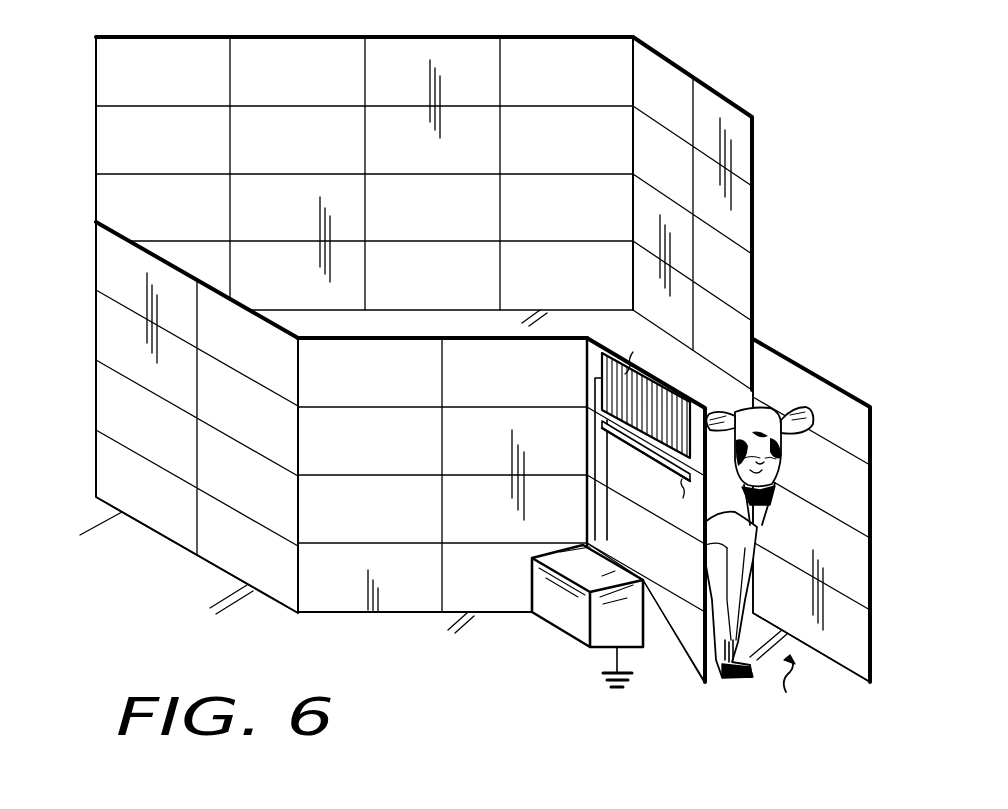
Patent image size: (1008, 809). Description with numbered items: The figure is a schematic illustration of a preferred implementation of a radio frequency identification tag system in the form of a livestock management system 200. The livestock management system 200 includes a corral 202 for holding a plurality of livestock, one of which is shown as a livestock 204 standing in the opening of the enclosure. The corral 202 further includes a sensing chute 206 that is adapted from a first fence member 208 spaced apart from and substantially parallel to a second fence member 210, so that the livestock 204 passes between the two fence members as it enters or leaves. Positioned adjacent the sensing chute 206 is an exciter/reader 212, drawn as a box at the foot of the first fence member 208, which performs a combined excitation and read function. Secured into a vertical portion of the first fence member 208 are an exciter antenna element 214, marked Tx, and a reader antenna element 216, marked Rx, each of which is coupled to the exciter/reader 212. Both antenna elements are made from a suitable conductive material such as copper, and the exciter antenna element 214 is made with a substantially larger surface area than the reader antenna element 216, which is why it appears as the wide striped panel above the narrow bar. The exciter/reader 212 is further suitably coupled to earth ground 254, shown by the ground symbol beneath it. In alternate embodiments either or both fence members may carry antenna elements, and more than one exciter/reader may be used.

The livestock management system 200 is at (446, 700).
The corral 202 is at (453, 318).
The livestock 204 is at (760, 520).
The sensing chute 206 is at (778, 689).
The first fence member 208 is at (651, 520).
The second fence member 210 is at (813, 368).
The exciter/reader 212 is at (562, 631).
The exciter antenna element 214 is at (630, 357).
The reader antenna element 216 is at (632, 450).
The earth ground 254 is at (605, 690).